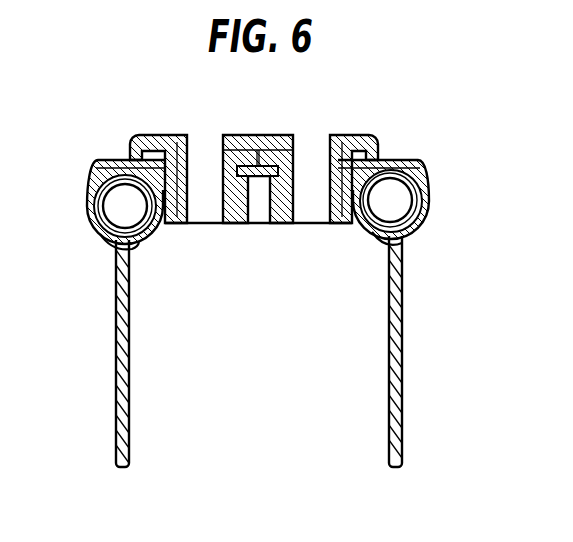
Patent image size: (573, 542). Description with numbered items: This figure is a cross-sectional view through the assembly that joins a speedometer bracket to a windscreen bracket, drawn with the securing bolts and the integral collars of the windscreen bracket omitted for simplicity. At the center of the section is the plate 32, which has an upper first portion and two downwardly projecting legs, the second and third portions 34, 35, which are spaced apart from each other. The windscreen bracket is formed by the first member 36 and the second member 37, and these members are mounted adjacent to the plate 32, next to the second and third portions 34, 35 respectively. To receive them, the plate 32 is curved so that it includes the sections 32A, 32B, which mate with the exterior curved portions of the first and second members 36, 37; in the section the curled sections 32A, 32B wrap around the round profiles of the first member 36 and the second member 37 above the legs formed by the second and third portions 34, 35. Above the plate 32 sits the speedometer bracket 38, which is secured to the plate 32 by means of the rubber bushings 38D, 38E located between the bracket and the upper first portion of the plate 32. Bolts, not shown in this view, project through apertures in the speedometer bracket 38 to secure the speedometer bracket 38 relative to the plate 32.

The plate 32 is at (396, 131).
The curved section of plate 32A is at (424, 186).
The curved section of plate 32B is at (98, 175).
The second portion 34 is at (403, 288).
The third portion 35 is at (116, 290).
The first member 36 is at (406, 230).
The second member 37 is at (115, 245).
The speedometer bracket 38 is at (163, 128).
The rubber bushing 38D is at (338, 224).
The rubber bushing 38E is at (180, 224).